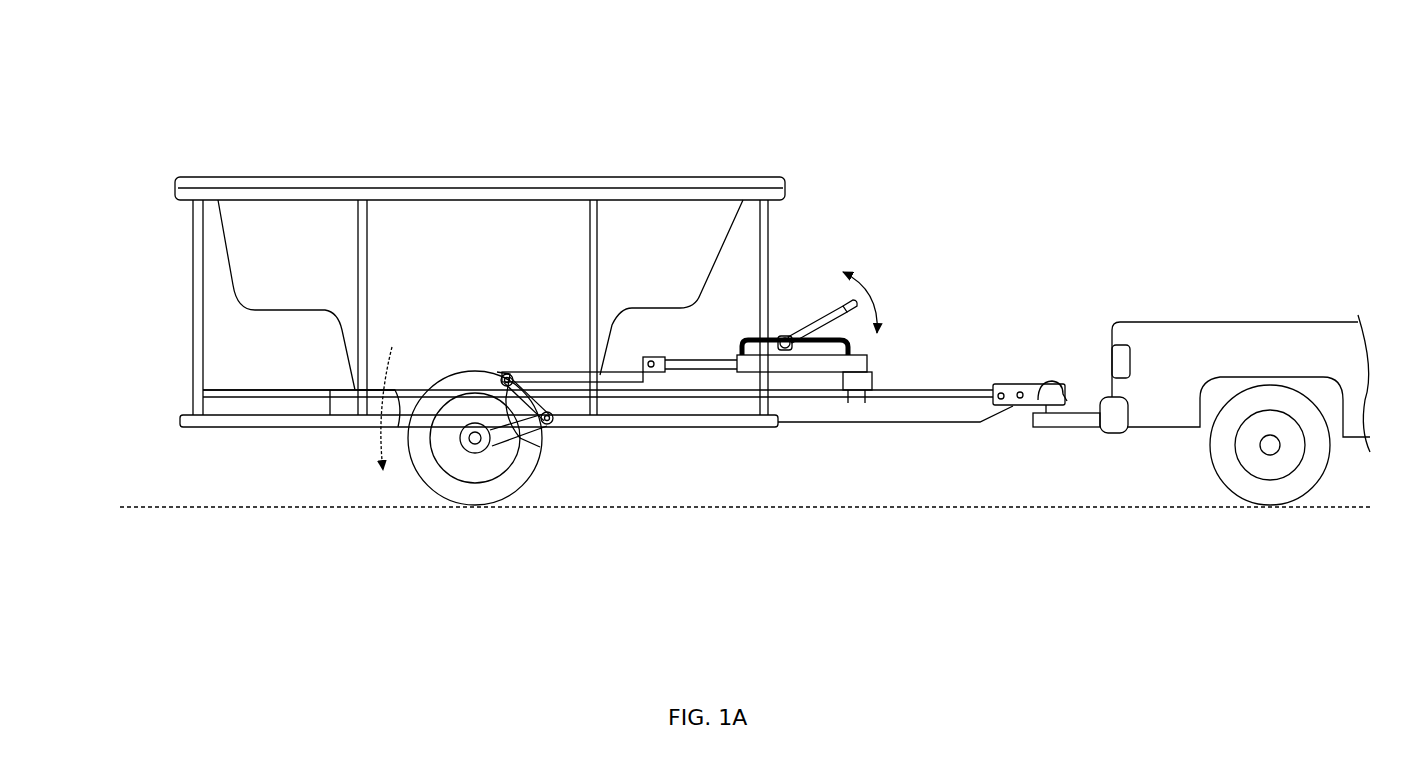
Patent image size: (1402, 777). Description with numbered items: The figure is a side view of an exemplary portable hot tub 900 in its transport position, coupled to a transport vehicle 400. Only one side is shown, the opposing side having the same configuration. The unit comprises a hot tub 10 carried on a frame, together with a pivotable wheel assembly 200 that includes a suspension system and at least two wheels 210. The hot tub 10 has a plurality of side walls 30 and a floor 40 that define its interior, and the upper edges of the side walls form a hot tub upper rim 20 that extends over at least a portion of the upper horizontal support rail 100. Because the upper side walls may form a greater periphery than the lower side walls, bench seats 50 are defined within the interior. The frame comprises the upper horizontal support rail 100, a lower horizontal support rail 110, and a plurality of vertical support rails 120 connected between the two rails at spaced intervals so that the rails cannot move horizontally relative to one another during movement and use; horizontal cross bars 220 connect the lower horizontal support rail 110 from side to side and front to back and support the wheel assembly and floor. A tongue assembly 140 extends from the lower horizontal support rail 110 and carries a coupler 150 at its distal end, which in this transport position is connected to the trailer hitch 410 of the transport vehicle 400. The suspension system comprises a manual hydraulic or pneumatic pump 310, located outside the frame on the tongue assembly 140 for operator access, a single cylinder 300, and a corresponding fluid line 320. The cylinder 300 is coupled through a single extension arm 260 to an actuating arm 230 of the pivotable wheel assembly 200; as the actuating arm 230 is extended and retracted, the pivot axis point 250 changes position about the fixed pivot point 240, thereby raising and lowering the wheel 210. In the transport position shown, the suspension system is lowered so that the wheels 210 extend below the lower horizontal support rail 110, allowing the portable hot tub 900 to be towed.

The portable hot tub 900 is at (980, 75).
The hot tub 10 is at (403, 297).
The hot tub upper rim 20 is at (192, 181).
The side walls 30 is at (333, 330).
The floor 40 is at (370, 394).
The bench seats 50 is at (655, 305).
The upper horizontal support rail 100 is at (400, 279).
The lower horizontal support rail 110 is at (180, 421).
The vertical support rails 120 is at (358, 368).
The tongue assembly 140 is at (944, 403).
The coupler 150 is at (1000, 385).
The pivotable wheel assembly 200 is at (516, 495).
The wheels 210 is at (519, 490).
The horizontal cross bars 220 is at (368, 418).
The actuating arm 230 is at (612, 379).
The fixed pivot point 240 is at (553, 424).
The pivot axis point 250 is at (510, 384).
The extension arm 260 is at (706, 352).
The cylinder 300 is at (795, 365).
The manual pump 310 is at (788, 335).
The fluid line 320 is at (838, 350).
The transport vehicle 400 is at (1201, 354).
The trailer hitch 410 is at (1057, 428).